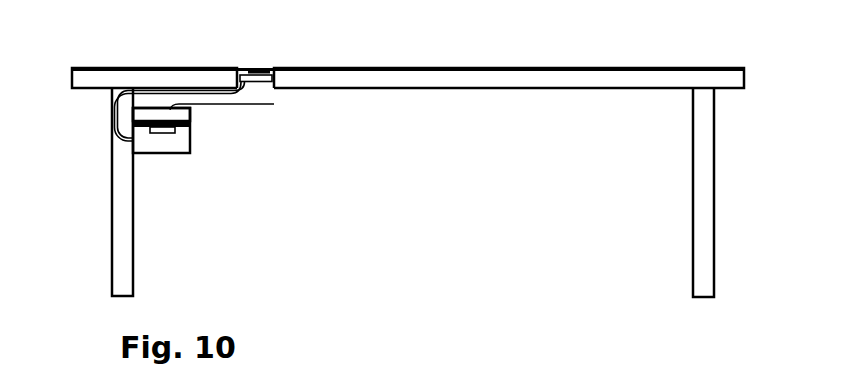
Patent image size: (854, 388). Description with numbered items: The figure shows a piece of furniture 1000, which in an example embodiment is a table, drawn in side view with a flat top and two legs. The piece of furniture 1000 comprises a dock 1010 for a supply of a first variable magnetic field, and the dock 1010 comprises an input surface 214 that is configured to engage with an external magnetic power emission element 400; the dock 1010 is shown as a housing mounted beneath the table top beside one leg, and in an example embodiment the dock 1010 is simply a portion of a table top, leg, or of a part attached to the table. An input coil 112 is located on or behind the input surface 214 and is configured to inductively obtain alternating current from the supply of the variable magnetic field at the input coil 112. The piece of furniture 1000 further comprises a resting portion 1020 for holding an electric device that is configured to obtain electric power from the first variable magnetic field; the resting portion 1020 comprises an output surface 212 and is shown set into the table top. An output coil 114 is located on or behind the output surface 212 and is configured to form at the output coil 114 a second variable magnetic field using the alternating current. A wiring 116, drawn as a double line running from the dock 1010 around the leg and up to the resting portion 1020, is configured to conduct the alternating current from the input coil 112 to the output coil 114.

The piece of furniture 1000 is at (408, 153).
The input surface 214 is at (363, 68).
The output coil 114 is at (252, 65).
The resting portion 1020 is at (265, 65).
The wiring 116 is at (109, 128).
The dock 1010 is at (200, 160).
The external magnetic power emission element 400 is at (192, 115).
The output surface 212 is at (188, 135).
The input coil 112 is at (274, 104).